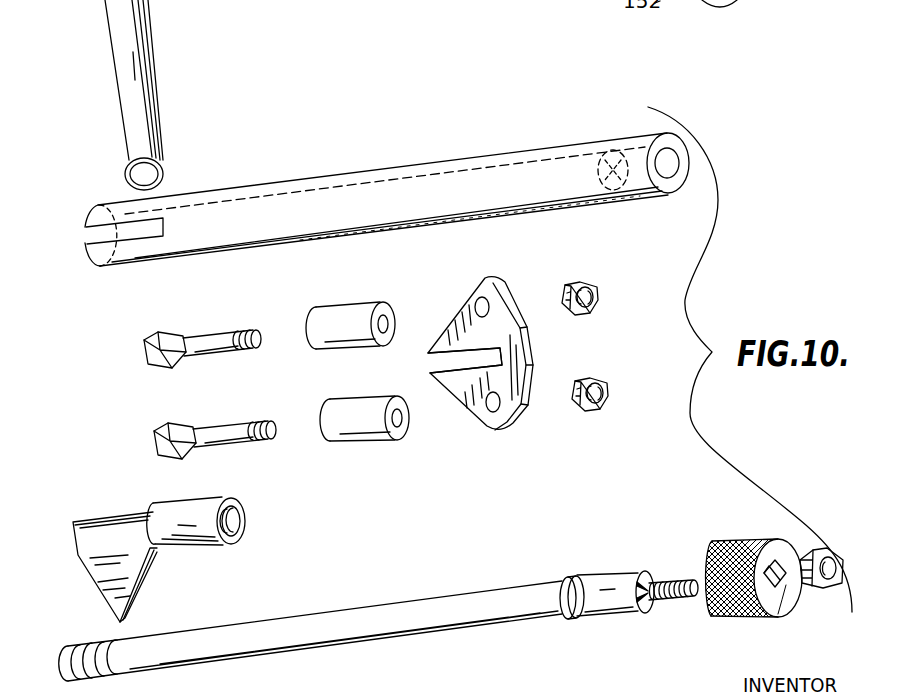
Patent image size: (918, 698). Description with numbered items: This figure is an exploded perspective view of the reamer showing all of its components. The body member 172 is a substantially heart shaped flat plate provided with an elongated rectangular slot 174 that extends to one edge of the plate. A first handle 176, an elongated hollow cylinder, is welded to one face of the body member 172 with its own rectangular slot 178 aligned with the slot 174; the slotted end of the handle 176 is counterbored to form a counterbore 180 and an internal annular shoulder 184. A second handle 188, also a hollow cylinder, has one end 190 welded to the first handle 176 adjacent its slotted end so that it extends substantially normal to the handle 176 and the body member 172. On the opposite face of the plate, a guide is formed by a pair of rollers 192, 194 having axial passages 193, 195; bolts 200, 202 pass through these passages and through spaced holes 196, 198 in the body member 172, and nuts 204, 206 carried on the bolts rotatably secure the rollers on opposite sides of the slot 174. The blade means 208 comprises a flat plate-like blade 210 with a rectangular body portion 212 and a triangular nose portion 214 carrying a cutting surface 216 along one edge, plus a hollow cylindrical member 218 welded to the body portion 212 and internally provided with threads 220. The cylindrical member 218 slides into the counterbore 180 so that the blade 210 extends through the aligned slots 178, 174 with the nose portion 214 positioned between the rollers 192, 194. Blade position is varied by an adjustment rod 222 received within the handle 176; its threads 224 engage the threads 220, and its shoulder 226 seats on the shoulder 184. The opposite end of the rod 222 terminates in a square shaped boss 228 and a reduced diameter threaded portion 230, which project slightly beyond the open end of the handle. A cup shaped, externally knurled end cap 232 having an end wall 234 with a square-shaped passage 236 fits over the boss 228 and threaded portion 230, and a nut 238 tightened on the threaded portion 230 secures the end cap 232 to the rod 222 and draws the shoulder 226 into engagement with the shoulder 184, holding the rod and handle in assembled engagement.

The body member 172 is at (527, 352).
The slot 174 is at (440, 363).
The handle 176 is at (428, 180).
The slot 178 is at (163, 236).
The counterbore 180 is at (547, 183).
The annular shoulder 184 is at (632, 148).
The handle 188 is at (147, 23).
The end 190 is at (165, 180).
The roller 192 is at (362, 441).
The passage 193 is at (402, 420).
The roller 194 is at (357, 304).
The passage 195 is at (387, 322).
The hole 196 is at (494, 412).
The hole 198 is at (472, 305).
The bolt 200 is at (223, 431).
The bolt 202 is at (217, 338).
The nut 204 is at (605, 398).
The nut 206 is at (598, 293).
The blade means 208 is at (178, 544).
The blade 210 is at (128, 566).
The body portion 212 is at (107, 522).
The nose portion 214 is at (103, 580).
The cutting surface 216 is at (140, 593).
The hollow cylindrical member 218 is at (189, 505).
The threads 220 is at (243, 521).
The rod 222 is at (360, 633).
The threads 224 is at (102, 673).
The shoulder 226 is at (567, 580).
The square shaped boss 228 is at (645, 605).
The threaded portion 230 is at (672, 580).
The end cap 232 is at (747, 540).
The end wall 234 is at (780, 587).
The square-shaped passage 236 is at (792, 592).
The nut 238 is at (813, 550).